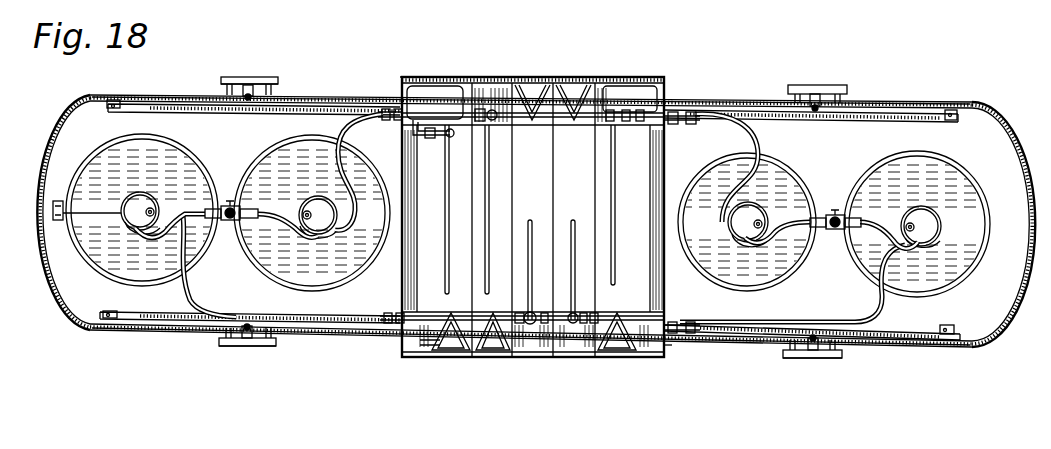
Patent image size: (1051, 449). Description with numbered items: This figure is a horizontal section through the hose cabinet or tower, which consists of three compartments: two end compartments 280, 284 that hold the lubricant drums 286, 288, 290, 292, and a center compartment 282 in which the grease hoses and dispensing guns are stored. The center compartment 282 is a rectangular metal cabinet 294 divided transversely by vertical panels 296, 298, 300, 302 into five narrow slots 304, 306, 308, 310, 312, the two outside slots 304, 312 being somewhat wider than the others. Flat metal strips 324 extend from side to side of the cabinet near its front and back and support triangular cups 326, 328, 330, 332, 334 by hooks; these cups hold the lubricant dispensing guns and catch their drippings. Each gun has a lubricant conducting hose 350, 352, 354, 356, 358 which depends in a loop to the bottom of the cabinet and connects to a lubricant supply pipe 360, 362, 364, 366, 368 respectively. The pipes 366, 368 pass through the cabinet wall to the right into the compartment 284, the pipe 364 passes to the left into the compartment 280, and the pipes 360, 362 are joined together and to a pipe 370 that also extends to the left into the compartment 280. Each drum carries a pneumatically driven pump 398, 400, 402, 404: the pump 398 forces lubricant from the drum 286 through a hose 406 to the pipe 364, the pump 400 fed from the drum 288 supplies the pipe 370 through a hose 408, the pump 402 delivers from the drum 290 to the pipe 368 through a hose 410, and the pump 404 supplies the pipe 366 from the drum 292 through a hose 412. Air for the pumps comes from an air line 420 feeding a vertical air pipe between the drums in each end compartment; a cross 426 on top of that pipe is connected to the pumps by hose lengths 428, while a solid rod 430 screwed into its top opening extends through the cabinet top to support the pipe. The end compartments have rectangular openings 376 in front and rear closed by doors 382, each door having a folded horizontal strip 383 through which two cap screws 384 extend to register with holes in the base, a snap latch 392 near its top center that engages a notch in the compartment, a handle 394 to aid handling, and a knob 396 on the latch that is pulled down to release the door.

The end compartment 280 is at (175, 93).
The center compartment 282 is at (525, 78).
The end compartment 284 is at (745, 75).
The lubricant drum 286 is at (123, 141).
The lubricant drum 288 is at (300, 144).
The lubricant drum 290 is at (797, 152).
The lubricant drum 292 is at (887, 163).
The rectangular metal cabinet 294 is at (593, 87).
The vertical panel 296 is at (467, 83).
The vertical panel 298 is at (503, 93).
The vertical panel 300 is at (586, 100).
The vertical panel 302 is at (617, 87).
The slot 304 is at (437, 298).
The slot 306 is at (480, 360).
The slot 308 is at (553, 357).
The slot 310 is at (587, 360).
The slot 312 is at (652, 286).
The flat metal strip 324 is at (450, 80).
The triangular cup 326 is at (422, 347).
The triangular cup 328 is at (478, 356).
The triangular cup 330 is at (537, 116).
The triangular cup 332 is at (577, 116).
The triangular cup 334 is at (668, 348).
The lubricant conducting hose 350 is at (448, 225).
The lubricant conducting hose 352 is at (487, 228).
The lubricant conducting hose 354 is at (531, 220).
The lubricant conducting hose 356 is at (574, 220).
The lubricant conducting hose 358 is at (646, 160).
The lubricant supply pipe 360 is at (428, 140).
The lubricant supply pipe 362 is at (447, 115).
The lubricant supply pipe 364 is at (402, 314).
The lubricant supply pipe 366 is at (655, 305).
The lubricant supply pipe 368 is at (655, 100).
The pipe 370 is at (392, 85).
The rectangular opening 376 is at (118, 84).
The door 382 is at (347, 97).
The horizontal strip 383 is at (238, 111).
The cap screw 384 is at (310, 93).
The snap latch 392 is at (253, 93).
The handle 394 is at (283, 344).
The knob 396 is at (245, 90).
The pneumatically driven pump 398 is at (177, 180).
The pneumatically driven pump 400 is at (325, 180).
The pneumatically driven pump 402 is at (780, 202).
The pneumatically driven pump 404 is at (943, 190).
The hose 406 is at (205, 311).
The hose 408 is at (347, 132).
The hose 410 is at (747, 127).
The hose 412 is at (837, 308).
The air line 420 is at (66, 203).
The cross 426 is at (230, 201).
The hose length 428 is at (197, 226).
The solid rod 430 is at (253, 209).